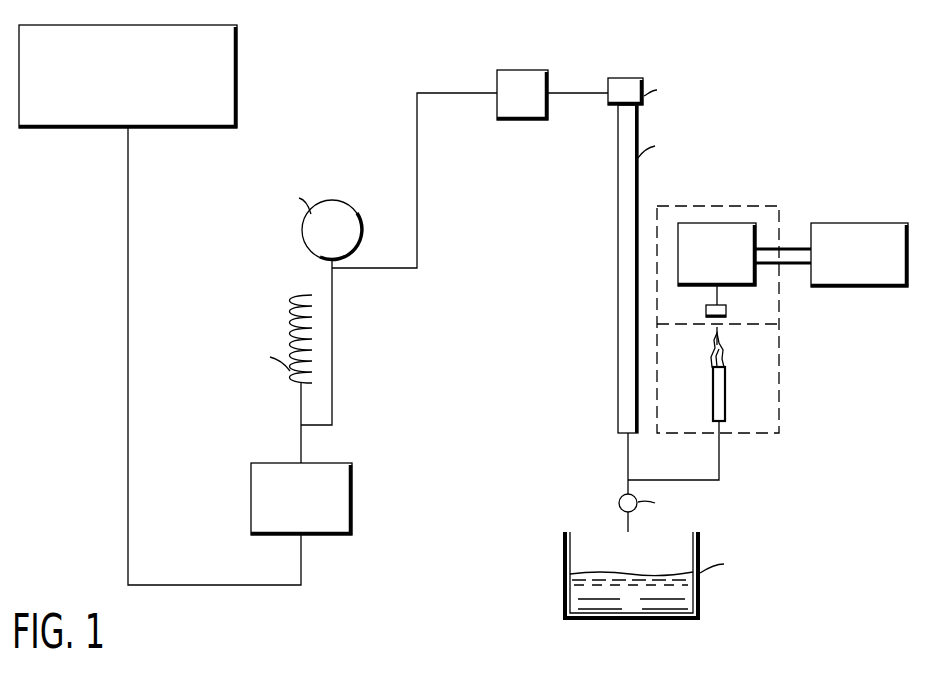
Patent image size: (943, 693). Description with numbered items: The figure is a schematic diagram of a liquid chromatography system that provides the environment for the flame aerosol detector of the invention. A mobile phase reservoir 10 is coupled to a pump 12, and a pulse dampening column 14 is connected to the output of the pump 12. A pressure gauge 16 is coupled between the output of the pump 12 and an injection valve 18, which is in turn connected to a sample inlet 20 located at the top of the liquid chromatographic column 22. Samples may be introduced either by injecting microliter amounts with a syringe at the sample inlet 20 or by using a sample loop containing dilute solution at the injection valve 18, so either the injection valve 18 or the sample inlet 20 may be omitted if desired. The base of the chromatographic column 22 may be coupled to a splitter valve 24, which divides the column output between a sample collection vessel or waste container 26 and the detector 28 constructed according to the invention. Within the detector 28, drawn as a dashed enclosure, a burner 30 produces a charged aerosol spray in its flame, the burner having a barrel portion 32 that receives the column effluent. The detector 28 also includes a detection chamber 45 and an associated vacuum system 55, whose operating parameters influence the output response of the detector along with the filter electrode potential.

The mobile phase reservoir 10 is at (237, 33).
The pump 12 is at (292, 520).
The pulse dampening column 14 is at (290, 305).
The pressure gauge 16 is at (362, 186).
The injection valve 18 is at (538, 68).
The sample inlet 20 is at (643, 78).
The liquid chromatographic column 22 is at (618, 180).
The splitter valve 24 is at (814, 516).
The sample collection vessel 26 is at (849, 598).
The detector 28 is at (779, 383).
The burner 30 is at (725, 385).
The barrel portion 32 is at (738, 333).
The detection chamber 45 is at (735, 223).
The vacuum system 55 is at (835, 223).